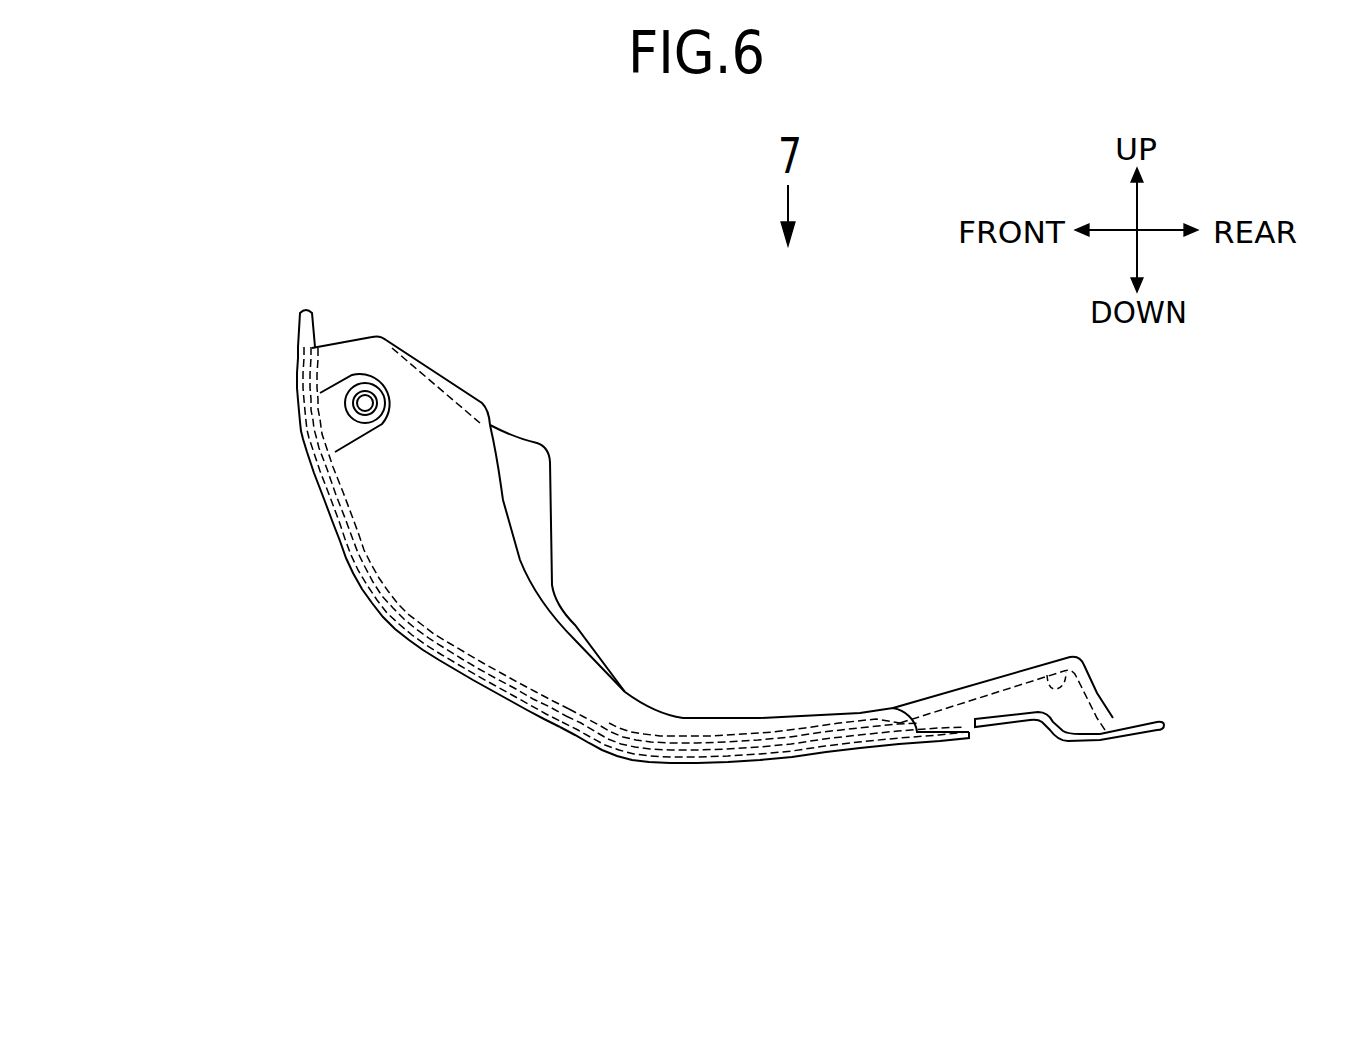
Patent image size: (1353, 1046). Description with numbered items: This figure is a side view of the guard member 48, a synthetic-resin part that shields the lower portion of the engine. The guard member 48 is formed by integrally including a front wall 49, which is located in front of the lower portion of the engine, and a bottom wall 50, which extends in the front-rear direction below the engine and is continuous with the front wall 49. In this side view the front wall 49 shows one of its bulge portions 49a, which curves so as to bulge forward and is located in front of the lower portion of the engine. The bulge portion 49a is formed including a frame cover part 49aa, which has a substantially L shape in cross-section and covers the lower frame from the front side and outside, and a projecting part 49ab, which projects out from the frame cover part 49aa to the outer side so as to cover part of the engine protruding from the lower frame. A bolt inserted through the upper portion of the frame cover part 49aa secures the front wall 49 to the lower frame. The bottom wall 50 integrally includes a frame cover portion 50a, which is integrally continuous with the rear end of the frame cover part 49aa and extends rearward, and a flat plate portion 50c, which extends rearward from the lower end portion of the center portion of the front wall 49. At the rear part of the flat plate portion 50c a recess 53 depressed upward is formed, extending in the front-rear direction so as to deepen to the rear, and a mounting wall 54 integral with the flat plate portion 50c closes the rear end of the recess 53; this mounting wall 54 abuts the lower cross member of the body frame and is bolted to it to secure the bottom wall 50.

The guard member 48 is at (638, 604).
The front wall 49 is at (387, 582).
The bulge portion 49a is at (387, 514).
The frame cover part 49aa is at (533, 480).
The projecting part 49ab is at (453, 547).
The bottom wall 50 is at (865, 723).
The frame cover portion 50a is at (821, 690).
The flat plate portion 50c is at (1003, 663).
The recess 53 is at (1063, 662).
The mounting wall 54 is at (1110, 705).